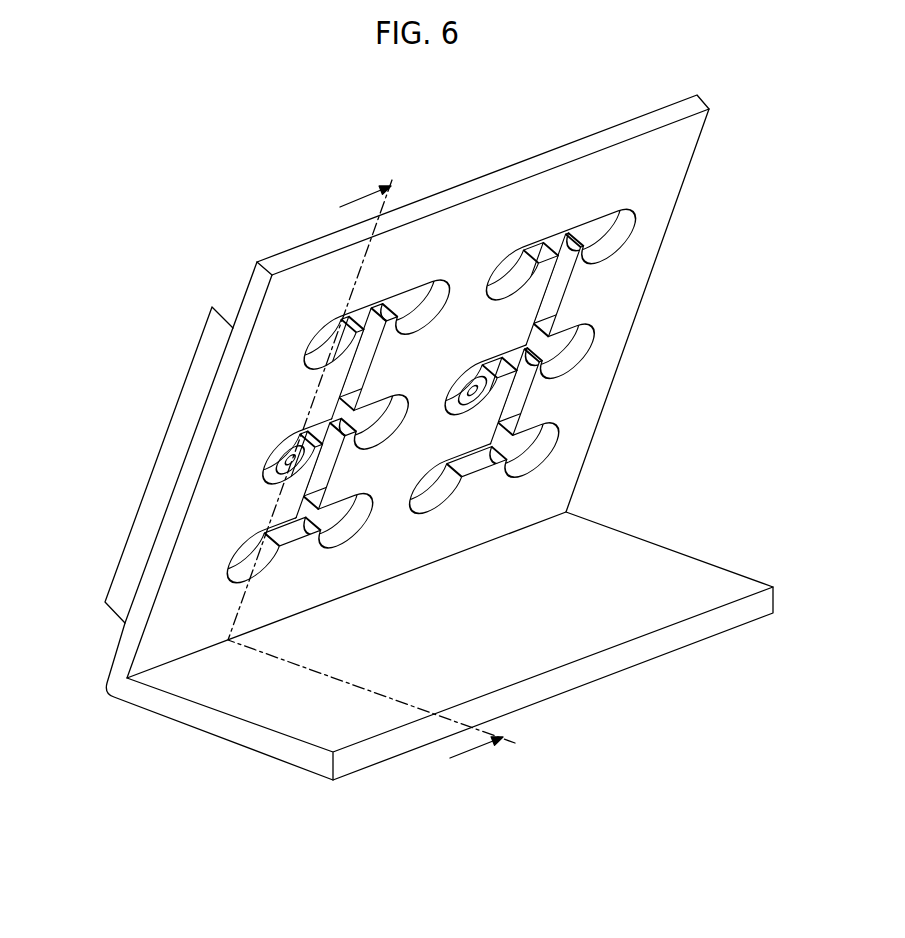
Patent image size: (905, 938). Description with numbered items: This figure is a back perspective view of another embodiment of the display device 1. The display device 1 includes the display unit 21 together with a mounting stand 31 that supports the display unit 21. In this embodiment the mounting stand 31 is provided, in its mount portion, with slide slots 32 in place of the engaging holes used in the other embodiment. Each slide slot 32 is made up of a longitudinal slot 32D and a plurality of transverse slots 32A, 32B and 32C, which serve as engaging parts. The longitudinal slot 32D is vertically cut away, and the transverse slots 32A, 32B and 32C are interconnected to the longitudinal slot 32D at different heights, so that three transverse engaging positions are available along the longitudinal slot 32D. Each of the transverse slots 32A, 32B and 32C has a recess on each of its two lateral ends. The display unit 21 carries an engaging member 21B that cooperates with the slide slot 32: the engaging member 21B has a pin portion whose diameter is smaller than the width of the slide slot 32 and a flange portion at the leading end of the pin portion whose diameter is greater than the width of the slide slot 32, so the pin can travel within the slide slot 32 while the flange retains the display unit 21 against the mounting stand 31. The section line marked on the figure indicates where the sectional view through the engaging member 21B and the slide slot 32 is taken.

The display device 1 is at (428, 146).
The display unit 21 is at (223, 307).
The engaging member 21B is at (273, 450).
The mounting stand 31 is at (588, 140).
The slide slot 32 is at (557, 244).
The transverse slot 32A is at (612, 247).
The transverse slot 32B is at (578, 345).
The transverse slot 32C is at (548, 445).
The longitudinal slot 32D is at (500, 383).